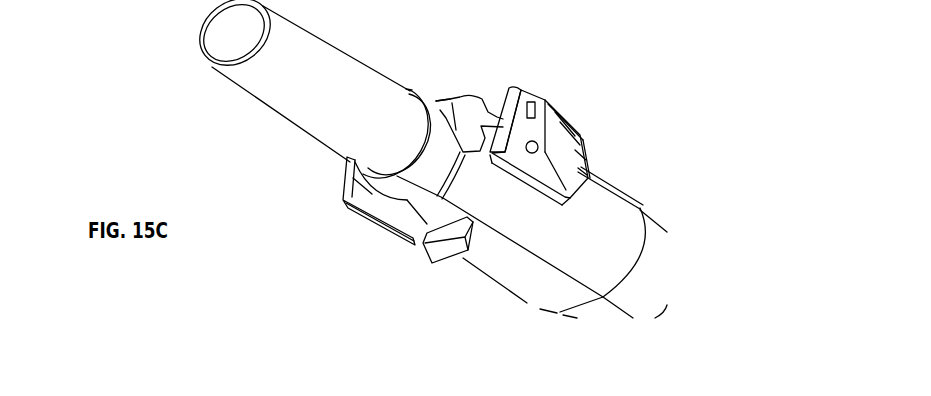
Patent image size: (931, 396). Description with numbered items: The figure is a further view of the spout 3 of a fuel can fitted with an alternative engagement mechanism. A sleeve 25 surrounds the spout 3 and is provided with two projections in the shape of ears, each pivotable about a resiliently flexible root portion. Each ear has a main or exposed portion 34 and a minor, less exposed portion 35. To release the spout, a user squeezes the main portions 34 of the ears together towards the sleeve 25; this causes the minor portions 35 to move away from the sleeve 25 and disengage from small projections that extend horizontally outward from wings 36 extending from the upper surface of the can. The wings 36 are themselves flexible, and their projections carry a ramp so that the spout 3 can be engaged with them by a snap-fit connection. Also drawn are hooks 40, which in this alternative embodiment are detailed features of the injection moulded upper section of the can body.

The spout 3 is at (633, 184).
The sleeve 25 is at (506, 271).
The main portion of the ears 34 is at (570, 137).
The minor portion of the ears 35 is at (549, 85).
The wings 36 is at (197, 67).
The hooks 40 is at (412, 256).